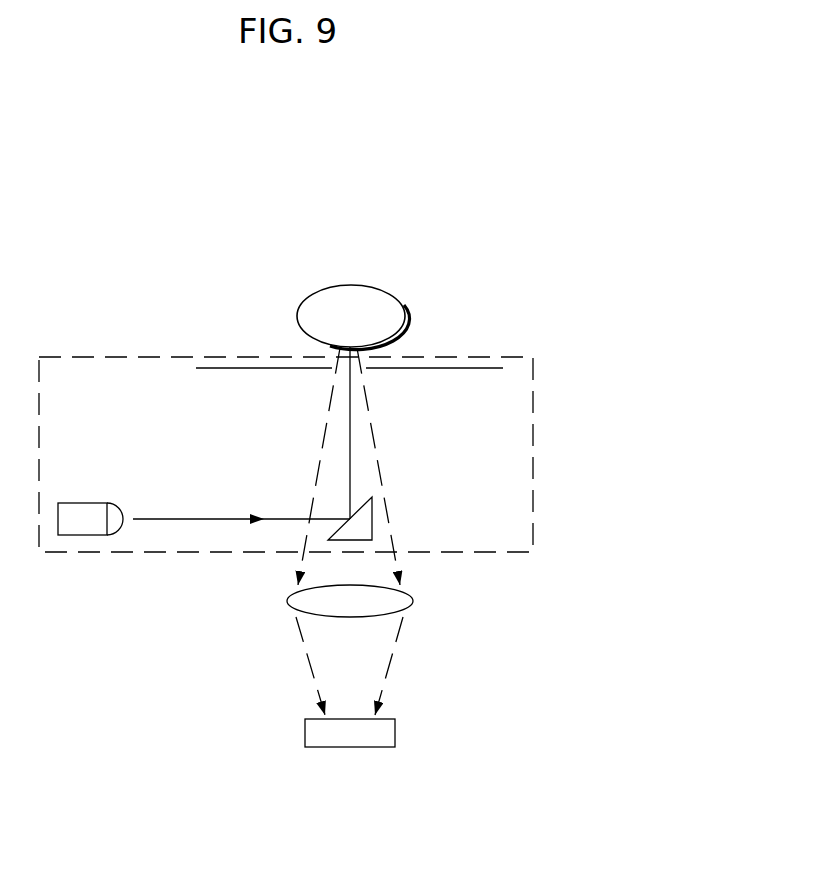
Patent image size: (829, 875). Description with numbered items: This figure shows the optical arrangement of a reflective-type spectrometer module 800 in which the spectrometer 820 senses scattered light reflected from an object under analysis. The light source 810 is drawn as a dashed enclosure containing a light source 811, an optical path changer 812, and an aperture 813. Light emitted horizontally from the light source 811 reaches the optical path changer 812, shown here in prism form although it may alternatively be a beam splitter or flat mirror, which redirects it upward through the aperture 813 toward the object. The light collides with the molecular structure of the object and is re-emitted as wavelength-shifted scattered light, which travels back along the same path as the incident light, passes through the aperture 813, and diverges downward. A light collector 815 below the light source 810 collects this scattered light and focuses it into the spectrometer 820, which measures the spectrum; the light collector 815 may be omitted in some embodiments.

The spectrometer module 800 is at (470, 216).
The light source 810 is at (477, 357).
The light source 811 is at (85, 530).
The optical path changer 812 is at (372, 519).
The aperture 813 is at (473, 371).
The light collector 815 is at (413, 601).
The spectrometer 820 is at (395, 735).